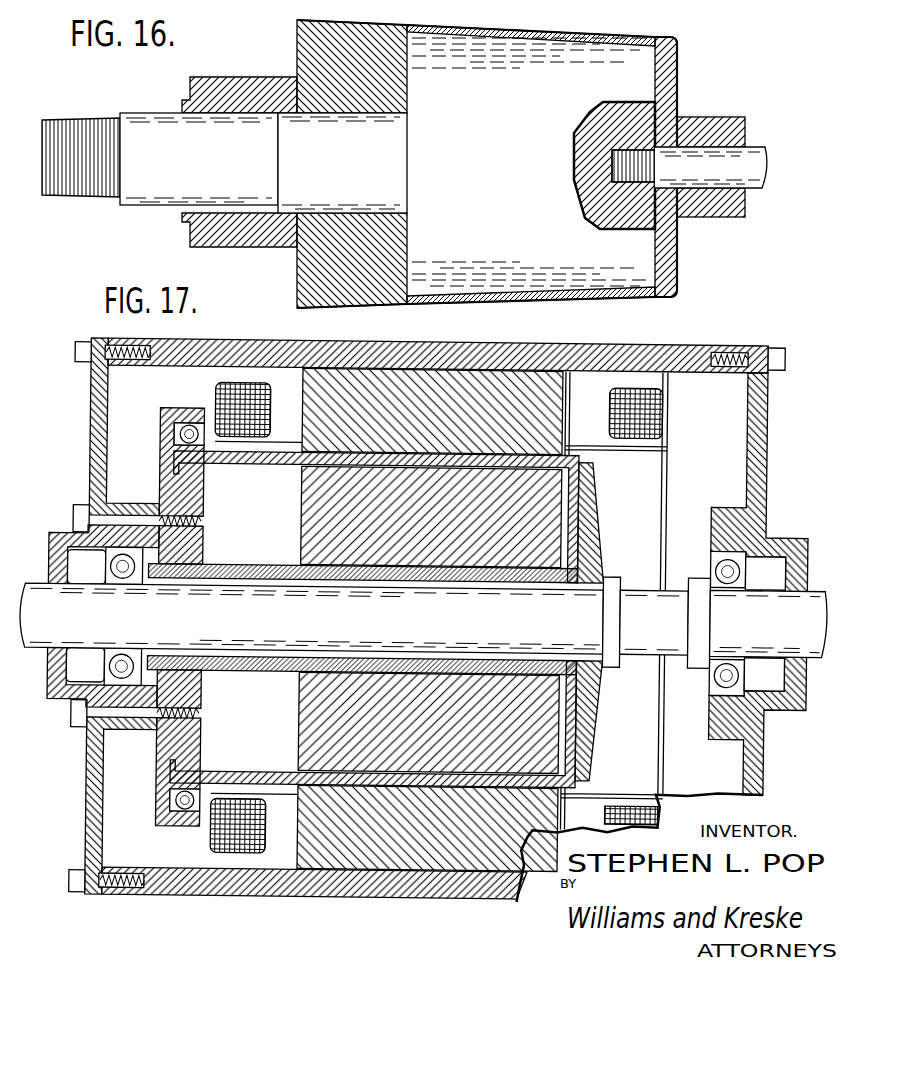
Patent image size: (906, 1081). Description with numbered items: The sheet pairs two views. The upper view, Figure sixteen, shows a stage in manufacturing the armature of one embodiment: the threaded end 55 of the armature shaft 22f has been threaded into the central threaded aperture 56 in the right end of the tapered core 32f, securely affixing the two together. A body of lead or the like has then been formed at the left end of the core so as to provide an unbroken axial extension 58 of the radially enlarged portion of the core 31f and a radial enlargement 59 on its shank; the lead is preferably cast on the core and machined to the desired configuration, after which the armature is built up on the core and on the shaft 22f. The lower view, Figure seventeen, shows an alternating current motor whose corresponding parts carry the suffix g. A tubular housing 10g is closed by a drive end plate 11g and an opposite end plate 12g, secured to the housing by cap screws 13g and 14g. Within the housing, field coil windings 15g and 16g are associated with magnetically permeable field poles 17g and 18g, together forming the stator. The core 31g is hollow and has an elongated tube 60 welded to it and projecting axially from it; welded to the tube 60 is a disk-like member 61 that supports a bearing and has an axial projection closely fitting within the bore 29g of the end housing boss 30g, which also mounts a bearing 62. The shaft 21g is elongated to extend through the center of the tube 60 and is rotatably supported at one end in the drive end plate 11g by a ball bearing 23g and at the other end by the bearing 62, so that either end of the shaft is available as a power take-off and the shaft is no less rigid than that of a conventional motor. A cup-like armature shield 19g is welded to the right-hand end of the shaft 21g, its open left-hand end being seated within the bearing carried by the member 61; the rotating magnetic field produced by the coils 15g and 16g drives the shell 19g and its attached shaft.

In FIG. 16, the axial extension 58 is at (320, 40).
In FIG. 16, the radial enlargement 59 is at (207, 110).
In FIG. 16, the central threaded aperture 56 is at (613, 157).
In FIG. 16, the threaded end 55 is at (676, 118).
In FIG. 16, the armature shaft 22f is at (748, 156).
In FIG. 16, the tapered core 32f is at (224, 163).
In FIG. 16, the cylindrical core 31f is at (531, 162).
In FIG. 17, the tubular housing 10g is at (630, 357).
In FIG. 17, the drive end plate 11g is at (765, 430).
In FIG. 17, the end plate 12g is at (90, 458).
In FIG. 17, the cap screws 13g is at (779, 340).
In FIG. 17, the cap screws 14g is at (72, 352).
In FIG. 17, the field coil winding 15g is at (652, 413).
In FIG. 17, the field coil winding 16g is at (640, 801).
In FIG. 17, the field pole 17g is at (487, 380).
In FIG. 17, the field pole 18g is at (435, 851).
In FIG. 17, the armature shield 19g is at (597, 530).
In FIG. 17, the shaft 21g is at (805, 588).
In FIG. 17, the ball bearing 23g is at (752, 560).
In FIG. 17, the bore 29g is at (205, 432).
In FIG. 17, the end housing boss 30g is at (118, 530).
In FIG. 17, the core 31g is at (300, 524).
In FIG. 17, the elongated tube 60 is at (263, 670).
In FIG. 17, the disk-like member 61 is at (185, 496).
In FIG. 17, the bearing 62 is at (93, 669).